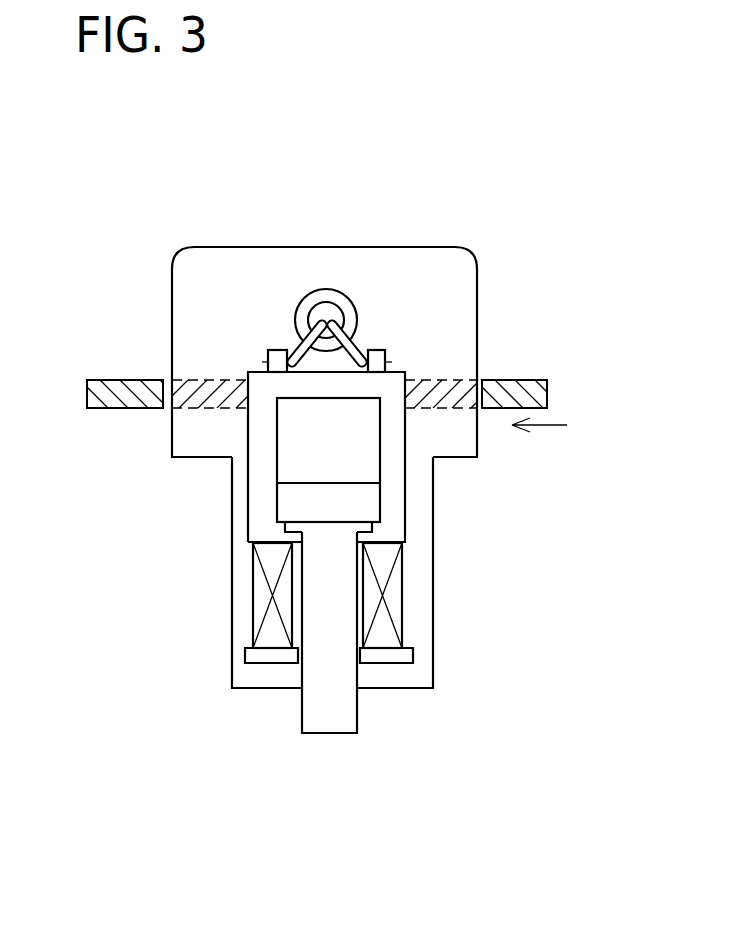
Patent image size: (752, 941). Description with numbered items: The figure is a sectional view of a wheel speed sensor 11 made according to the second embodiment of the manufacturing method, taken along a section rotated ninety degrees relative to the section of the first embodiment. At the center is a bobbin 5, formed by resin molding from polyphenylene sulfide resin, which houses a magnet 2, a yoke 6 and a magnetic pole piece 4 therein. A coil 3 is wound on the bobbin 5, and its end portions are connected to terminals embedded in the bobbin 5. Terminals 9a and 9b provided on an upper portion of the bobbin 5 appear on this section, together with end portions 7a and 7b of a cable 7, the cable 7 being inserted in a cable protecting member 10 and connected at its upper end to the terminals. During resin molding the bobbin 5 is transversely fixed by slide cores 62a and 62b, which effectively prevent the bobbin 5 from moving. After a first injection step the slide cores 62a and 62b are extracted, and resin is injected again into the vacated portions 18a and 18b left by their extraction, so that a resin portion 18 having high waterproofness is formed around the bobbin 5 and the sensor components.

The magnet 2 is at (298, 502).
The coil 3 is at (268, 633).
The magnetic pole piece 4 is at (325, 718).
The bobbin 5 is at (402, 527).
The yoke 6 is at (303, 447).
The cable 7 is at (330, 313).
The end portion of cable 7a is at (358, 347).
The end portion of cable 7b is at (283, 349).
The terminal 9a is at (383, 349).
The terminal 9b is at (275, 348).
The cable protecting member 10 is at (318, 290).
The wheel speed sensor 11 is at (467, 232).
The resin portion 18 is at (212, 433).
The vacated portion 18a is at (442, 392).
The vacated portion 18b is at (203, 380).
The slide core 62a is at (548, 397).
The slide core 62b is at (130, 380).